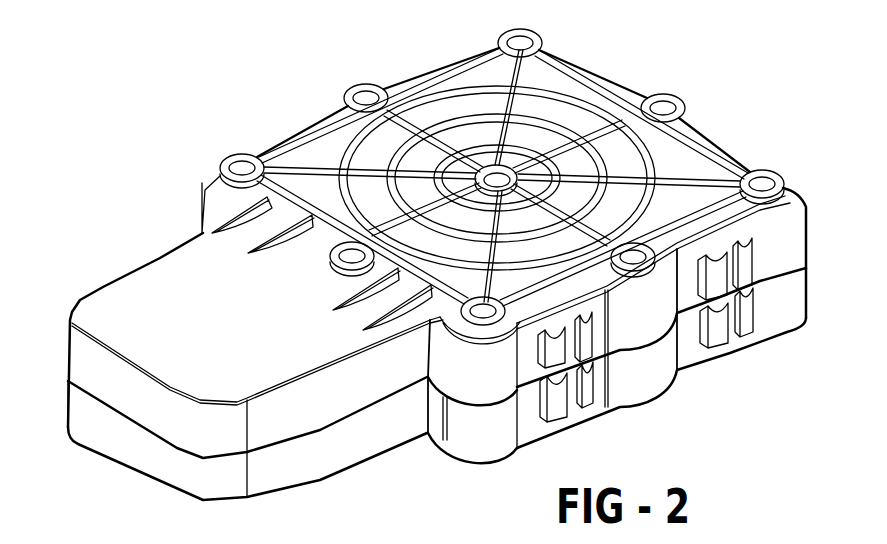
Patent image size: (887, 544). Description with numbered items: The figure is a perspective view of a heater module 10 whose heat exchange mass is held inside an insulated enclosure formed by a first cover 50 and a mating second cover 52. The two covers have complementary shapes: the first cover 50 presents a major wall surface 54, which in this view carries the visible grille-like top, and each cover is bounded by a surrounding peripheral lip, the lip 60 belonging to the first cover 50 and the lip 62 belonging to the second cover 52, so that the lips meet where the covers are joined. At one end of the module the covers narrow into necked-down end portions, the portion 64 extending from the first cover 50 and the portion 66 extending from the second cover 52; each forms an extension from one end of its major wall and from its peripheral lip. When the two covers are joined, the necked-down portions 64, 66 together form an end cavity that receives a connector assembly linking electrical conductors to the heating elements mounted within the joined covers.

The heater module 10 is at (735, 125).
The first cover 50 is at (316, 158).
The second cover 52 is at (465, 437).
The major wall surface 54 is at (568, 112).
The peripheral lip 60 is at (785, 237).
The peripheral lip 62 is at (775, 325).
The necked-down end portion 64 is at (78, 357).
The necked-down end portion 66 is at (108, 446).